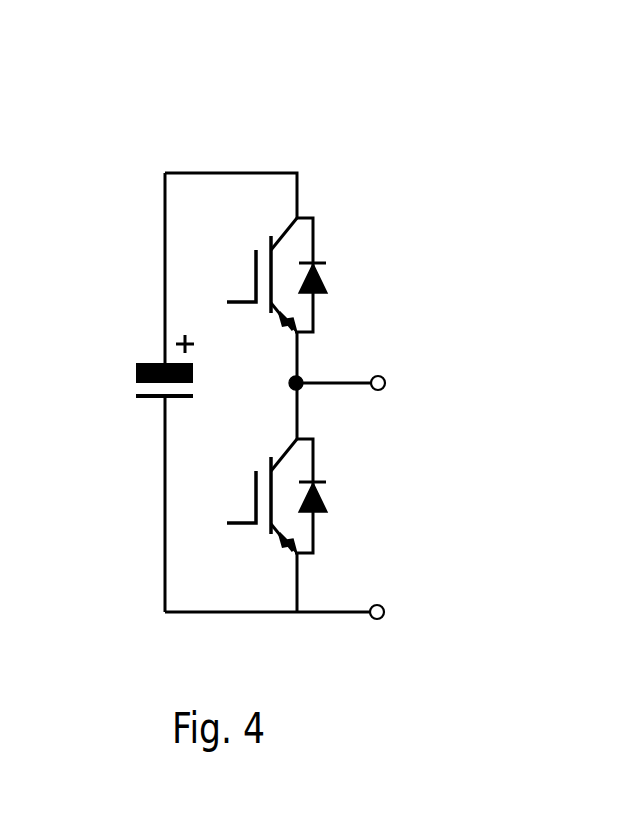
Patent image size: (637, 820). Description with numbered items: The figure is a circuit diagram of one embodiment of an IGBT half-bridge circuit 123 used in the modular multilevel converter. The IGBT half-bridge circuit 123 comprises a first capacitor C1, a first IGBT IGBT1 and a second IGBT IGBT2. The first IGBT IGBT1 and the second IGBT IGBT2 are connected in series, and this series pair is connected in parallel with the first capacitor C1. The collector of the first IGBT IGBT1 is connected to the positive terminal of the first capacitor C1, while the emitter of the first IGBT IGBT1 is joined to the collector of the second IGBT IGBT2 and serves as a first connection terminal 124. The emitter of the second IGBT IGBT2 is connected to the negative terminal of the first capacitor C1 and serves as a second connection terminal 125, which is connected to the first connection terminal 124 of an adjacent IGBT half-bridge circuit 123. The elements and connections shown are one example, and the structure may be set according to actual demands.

The IGBT half-bridge circuit 123 is at (238, 95).
The first connection terminal 124 is at (386, 377).
The second connection terminal 125 is at (384, 606).
The first capacitor C1 is at (135, 379).
The first IGBT IGBT1 is at (313, 247).
The second IGBT IGBT2 is at (312, 470).